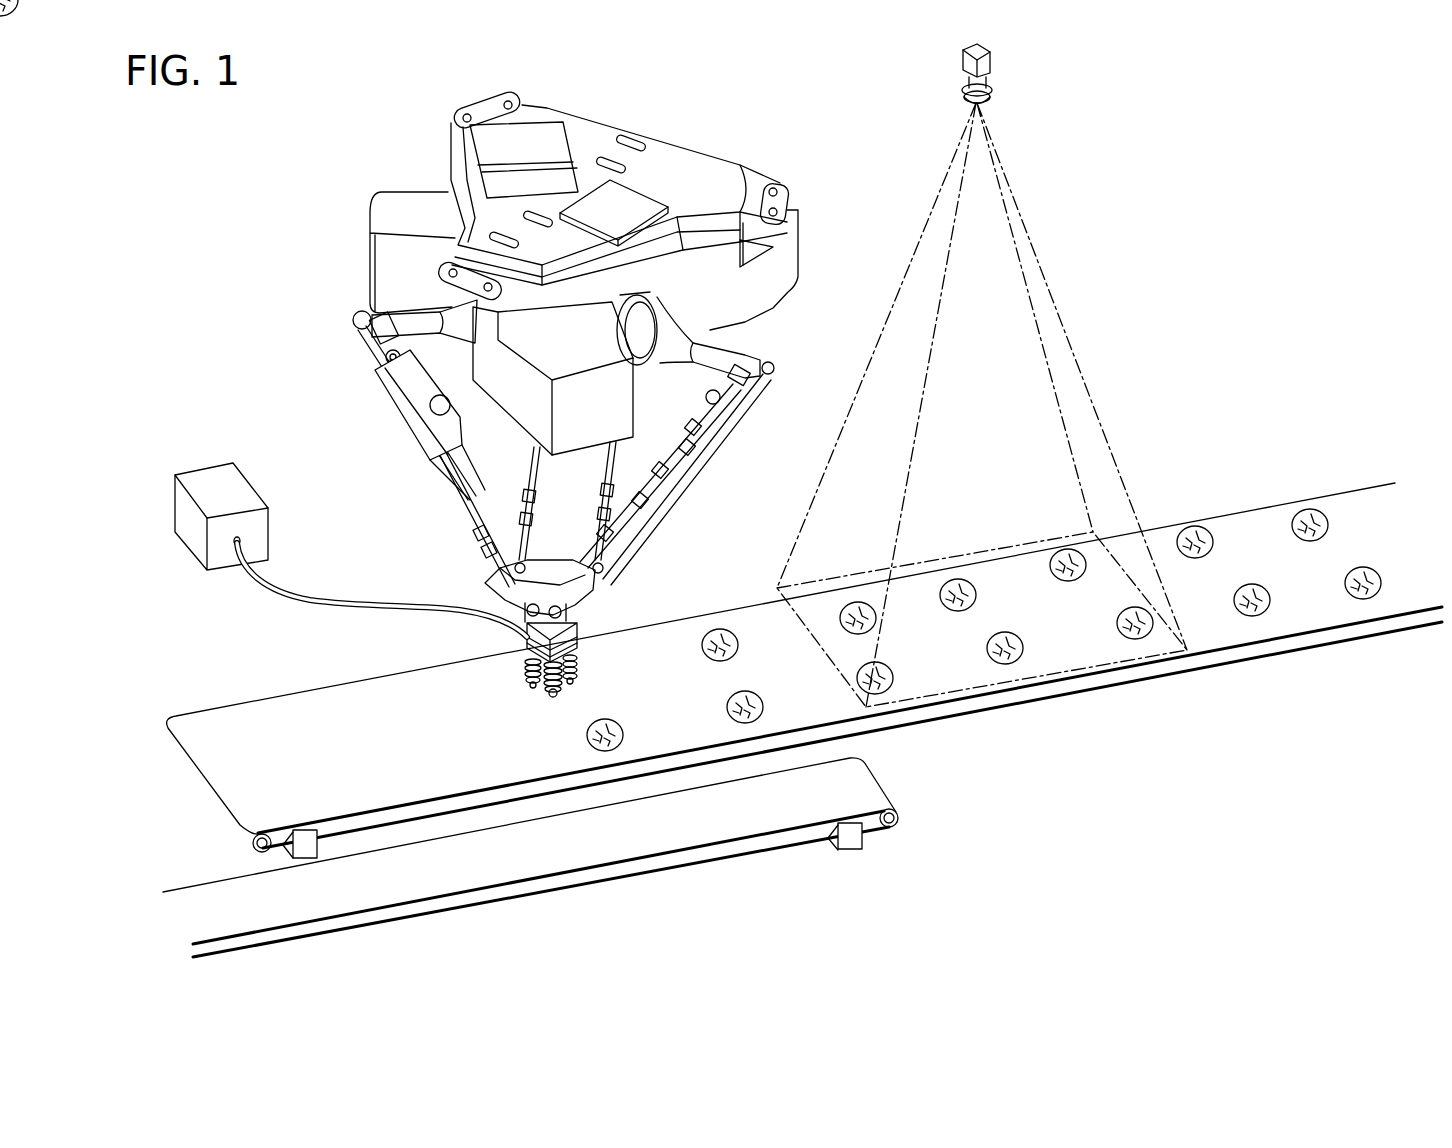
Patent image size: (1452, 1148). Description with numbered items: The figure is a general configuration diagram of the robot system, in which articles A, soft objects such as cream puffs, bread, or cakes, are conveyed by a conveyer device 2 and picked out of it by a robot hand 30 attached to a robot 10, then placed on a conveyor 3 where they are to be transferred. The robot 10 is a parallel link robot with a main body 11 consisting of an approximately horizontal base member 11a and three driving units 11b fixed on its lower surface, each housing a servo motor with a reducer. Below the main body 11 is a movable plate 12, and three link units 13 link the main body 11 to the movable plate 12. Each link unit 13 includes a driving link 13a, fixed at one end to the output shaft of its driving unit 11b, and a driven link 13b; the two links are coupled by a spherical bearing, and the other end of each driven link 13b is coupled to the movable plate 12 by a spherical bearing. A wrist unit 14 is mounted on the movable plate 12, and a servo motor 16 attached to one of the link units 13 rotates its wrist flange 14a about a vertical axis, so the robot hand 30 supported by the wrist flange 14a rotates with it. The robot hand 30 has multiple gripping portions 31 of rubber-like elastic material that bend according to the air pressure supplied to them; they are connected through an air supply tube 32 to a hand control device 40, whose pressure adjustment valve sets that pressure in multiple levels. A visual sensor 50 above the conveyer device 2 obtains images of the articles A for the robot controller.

The robot 10 is at (441, 110).
The main body 11 is at (587, 124).
The base member 11a is at (690, 170).
The driving unit 11b is at (403, 207).
The link unit 13 is at (352, 322).
The driving link 13a is at (400, 313).
The driven link 13b is at (455, 503).
The servo motor 16 is at (390, 408).
The movable plate 12 is at (480, 588).
The wrist unit 14 is at (572, 622).
The wrist flange 14a is at (590, 602).
The robot hand 30 is at (580, 655).
The gripping portion 31 is at (578, 672).
The air supply tube 32 is at (278, 590).
The hand control device 40 is at (204, 482).
The visual sensor 50 is at (993, 60).
The conveyer device 2 is at (1255, 500).
The conveyor 3 is at (868, 798).
The article A is at (722, 630).